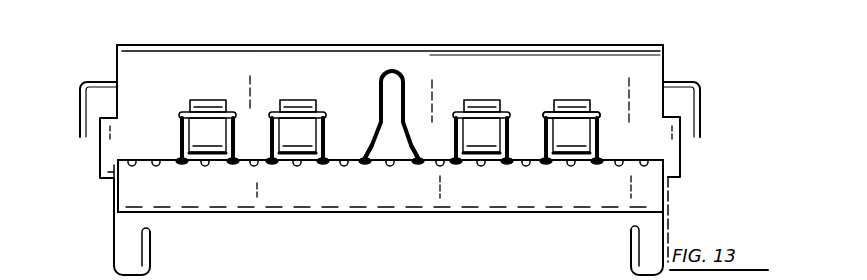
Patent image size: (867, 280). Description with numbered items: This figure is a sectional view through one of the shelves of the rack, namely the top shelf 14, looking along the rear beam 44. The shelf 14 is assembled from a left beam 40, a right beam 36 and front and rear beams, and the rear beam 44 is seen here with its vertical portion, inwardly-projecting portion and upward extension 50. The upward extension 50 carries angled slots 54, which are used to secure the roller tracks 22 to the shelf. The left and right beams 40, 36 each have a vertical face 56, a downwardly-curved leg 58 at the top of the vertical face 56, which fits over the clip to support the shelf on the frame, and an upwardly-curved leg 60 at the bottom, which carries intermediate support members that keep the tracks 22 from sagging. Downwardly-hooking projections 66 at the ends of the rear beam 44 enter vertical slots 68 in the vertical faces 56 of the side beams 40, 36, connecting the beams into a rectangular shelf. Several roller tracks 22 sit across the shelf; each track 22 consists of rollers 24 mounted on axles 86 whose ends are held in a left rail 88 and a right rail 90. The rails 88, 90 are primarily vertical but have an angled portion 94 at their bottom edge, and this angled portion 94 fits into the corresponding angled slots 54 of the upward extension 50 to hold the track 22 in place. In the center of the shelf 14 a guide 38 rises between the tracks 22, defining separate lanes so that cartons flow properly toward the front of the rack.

The top shelf 14 is at (614, 40).
The roller track 22 is at (508, 116).
The roller 24 is at (200, 100).
The right beam 36 is at (668, 214).
The guide 38 is at (395, 75).
The left beam 40 is at (113, 222).
The rear beam 44 is at (256, 45).
The upward extension 50 is at (448, 205).
The angled slot 54 is at (104, 132).
The vertical face 56 is at (668, 184).
The downwardly-curved leg 58 is at (83, 80).
The upwardly-curved leg 60 is at (150, 247).
The downwardly-hooking projection 66 is at (100, 152).
The vertical slot 68 is at (116, 116).
The axle 86 is at (599, 138).
The left rail 88 is at (257, 119).
The right rail 90 is at (329, 118).
The angled portion 94 is at (368, 165).